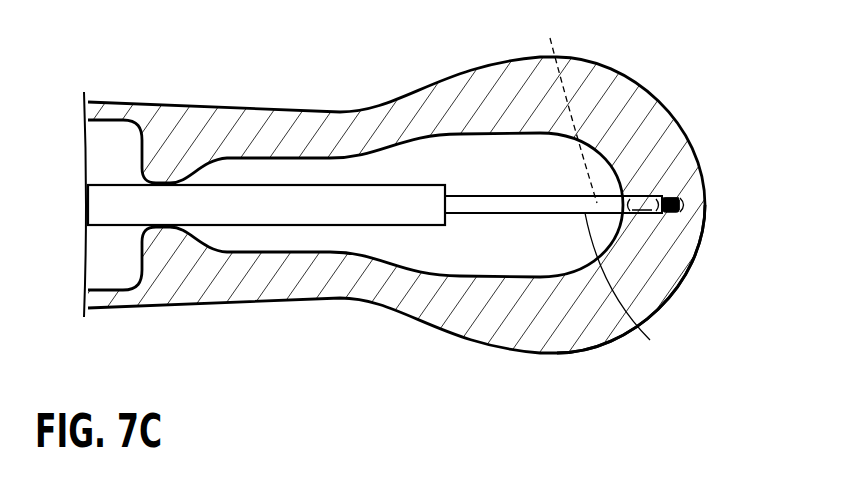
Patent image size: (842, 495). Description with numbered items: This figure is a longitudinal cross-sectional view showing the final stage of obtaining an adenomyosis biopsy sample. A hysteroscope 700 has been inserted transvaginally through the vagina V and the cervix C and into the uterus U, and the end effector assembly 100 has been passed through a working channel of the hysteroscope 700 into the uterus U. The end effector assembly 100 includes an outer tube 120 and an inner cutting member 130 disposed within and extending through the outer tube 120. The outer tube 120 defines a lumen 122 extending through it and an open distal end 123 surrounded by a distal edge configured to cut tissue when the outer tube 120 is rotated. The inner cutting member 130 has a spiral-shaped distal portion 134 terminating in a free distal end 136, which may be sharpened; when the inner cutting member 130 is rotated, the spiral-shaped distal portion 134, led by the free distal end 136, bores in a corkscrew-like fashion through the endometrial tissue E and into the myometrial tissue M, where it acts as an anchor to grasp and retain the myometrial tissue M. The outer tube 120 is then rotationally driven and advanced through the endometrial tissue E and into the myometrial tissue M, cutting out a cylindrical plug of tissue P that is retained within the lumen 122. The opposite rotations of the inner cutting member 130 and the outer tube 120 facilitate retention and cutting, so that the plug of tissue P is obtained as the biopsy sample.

The end effector assembly 100 is at (500, 234).
The outer tube 120 is at (542, 213).
The lumen 122 is at (592, 174).
The open distal end 123 is at (660, 323).
The inner cutting member 130 is at (675, 222).
The spiral-shaped distal portion 134 is at (678, 200).
The free distal end 136 is at (683, 205).
The hysteroscope 700 is at (115, 185).
The cervix C is at (167, 183).
The endometrial tissue E is at (515, 142).
The plug of tissue P is at (648, 197).
The myometrial tissue M is at (672, 295).
The vagina V is at (108, 270).
The uterus U is at (440, 248).